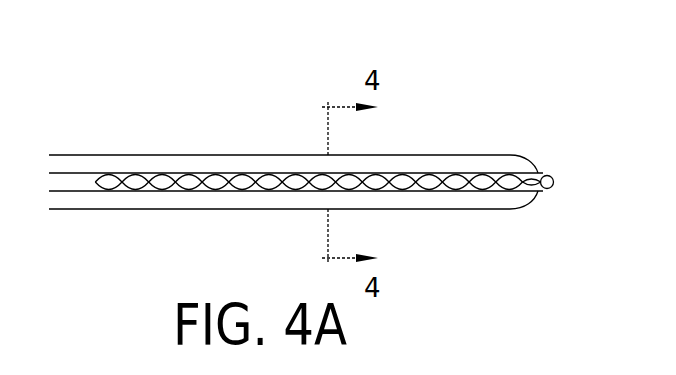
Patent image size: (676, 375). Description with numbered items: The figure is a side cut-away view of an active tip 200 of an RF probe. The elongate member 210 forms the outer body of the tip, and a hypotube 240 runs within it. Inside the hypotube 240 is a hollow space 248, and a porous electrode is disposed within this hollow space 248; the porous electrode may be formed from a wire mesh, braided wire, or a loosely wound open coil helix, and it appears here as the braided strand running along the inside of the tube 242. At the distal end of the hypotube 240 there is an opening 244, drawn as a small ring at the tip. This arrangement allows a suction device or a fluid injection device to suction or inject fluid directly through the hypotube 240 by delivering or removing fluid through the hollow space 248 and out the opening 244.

The catheter device 200 is at (486, 100).
The elongate member 210 is at (120, 155).
The hypotube 240 is at (213, 173).
The inner tube wall 242 is at (241, 191).
The opening 244 is at (554, 181).
The hollow space 248 is at (447, 184).